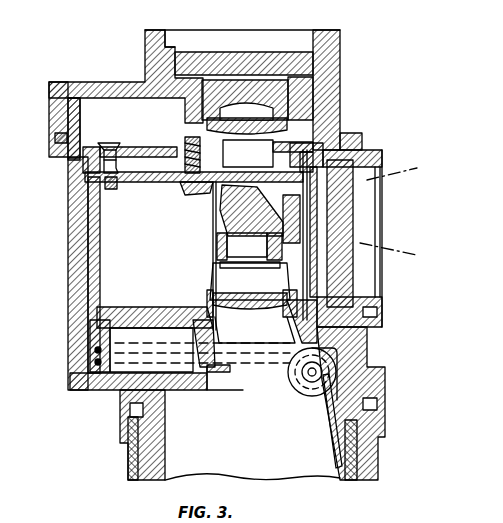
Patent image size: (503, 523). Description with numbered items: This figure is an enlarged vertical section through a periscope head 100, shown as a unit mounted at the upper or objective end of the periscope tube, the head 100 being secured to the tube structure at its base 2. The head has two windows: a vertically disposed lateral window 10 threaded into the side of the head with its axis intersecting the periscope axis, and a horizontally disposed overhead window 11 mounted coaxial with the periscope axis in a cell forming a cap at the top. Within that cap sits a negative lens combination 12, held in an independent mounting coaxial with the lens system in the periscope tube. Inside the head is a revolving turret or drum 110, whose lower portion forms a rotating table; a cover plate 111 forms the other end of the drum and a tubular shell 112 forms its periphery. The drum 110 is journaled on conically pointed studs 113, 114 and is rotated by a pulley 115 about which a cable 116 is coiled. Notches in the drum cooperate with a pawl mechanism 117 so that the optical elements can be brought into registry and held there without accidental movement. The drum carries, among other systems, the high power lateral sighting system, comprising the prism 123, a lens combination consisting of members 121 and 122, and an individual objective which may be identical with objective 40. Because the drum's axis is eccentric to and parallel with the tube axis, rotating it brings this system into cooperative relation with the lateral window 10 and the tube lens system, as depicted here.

The base 2 is at (378, 463).
The lateral window 10 is at (350, 200).
The overhead window 11 is at (275, 50).
The negative lens combination 12 is at (257, 124).
The objective 40 is at (252, 289).
The head 100 is at (75, 275).
The drum 110 is at (123, 310).
The cover plate 111 is at (153, 185).
The tubular shell 112 is at (100, 272).
The conically pointed stud 113 is at (193, 178).
The conically pointed stud 114 is at (200, 318).
The pulley 115 is at (118, 333).
The cable 116 is at (115, 184).
The pawl mechanism 117 is at (118, 150).
The lens combination member 121 is at (289, 235).
The lens combination member 122 is at (247, 256).
The prism 123 is at (251, 210).